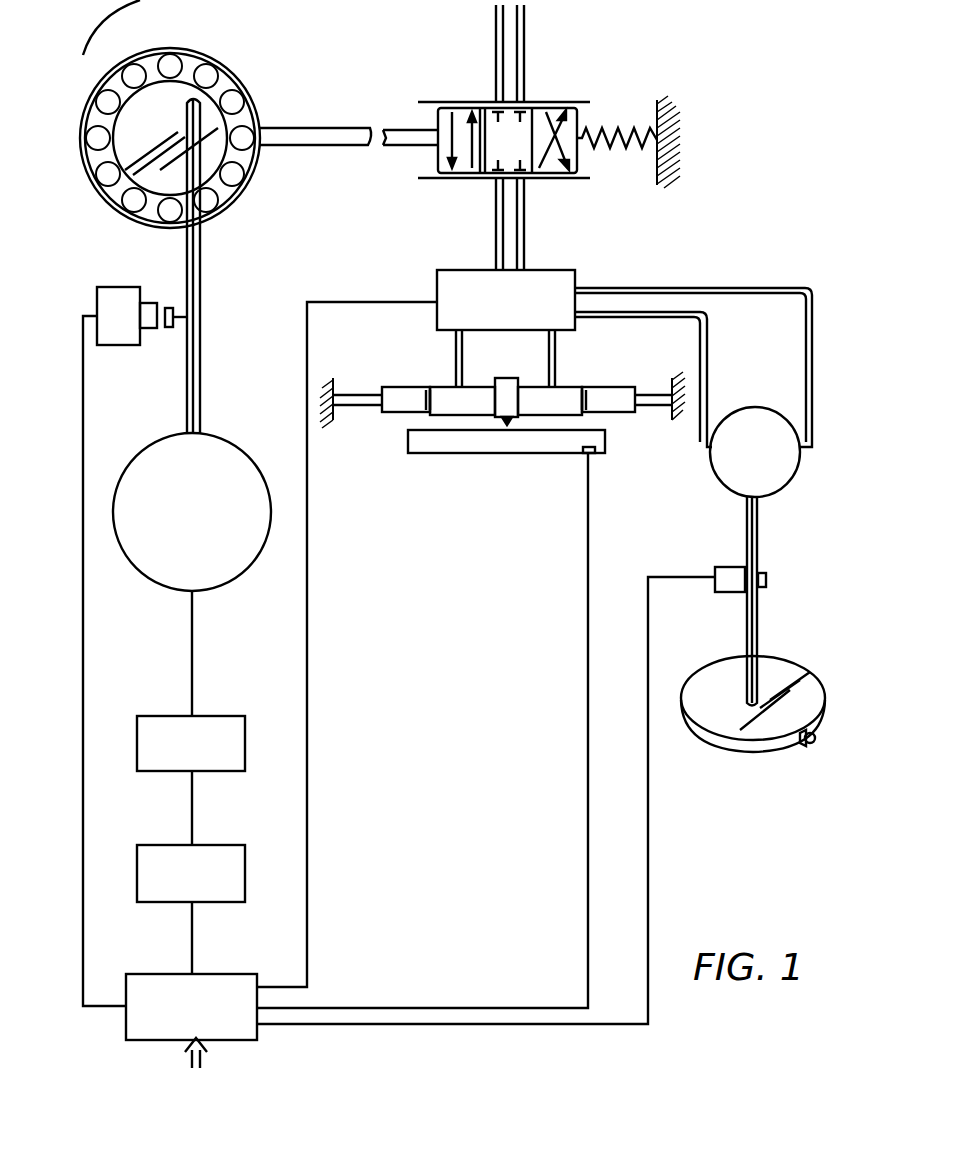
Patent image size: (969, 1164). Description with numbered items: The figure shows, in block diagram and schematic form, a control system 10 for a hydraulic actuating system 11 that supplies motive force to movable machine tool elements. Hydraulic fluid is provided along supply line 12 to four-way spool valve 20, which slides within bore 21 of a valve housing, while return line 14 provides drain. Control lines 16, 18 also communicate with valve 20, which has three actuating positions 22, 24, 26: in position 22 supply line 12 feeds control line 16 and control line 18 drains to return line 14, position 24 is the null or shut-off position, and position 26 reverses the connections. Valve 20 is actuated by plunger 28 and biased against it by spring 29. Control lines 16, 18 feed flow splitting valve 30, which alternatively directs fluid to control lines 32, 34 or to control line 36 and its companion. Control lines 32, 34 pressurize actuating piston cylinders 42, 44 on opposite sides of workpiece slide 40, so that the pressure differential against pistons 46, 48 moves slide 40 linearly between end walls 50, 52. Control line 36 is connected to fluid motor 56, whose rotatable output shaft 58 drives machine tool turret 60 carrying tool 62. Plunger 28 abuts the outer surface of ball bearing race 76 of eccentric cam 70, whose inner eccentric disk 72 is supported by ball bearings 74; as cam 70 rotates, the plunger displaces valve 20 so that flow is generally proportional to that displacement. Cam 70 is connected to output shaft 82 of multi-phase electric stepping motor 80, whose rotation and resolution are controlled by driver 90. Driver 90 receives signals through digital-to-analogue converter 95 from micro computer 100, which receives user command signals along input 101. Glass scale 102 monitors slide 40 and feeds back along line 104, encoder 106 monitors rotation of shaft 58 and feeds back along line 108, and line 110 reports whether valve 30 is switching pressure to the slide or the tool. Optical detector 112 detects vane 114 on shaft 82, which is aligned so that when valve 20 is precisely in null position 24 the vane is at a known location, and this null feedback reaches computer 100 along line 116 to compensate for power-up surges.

The control system 10 is at (96, 1038).
The hydraulic actuating system 11 is at (727, 163).
The supply line 12 is at (495, 42).
The return line 14 is at (525, 42).
The hydraulic control line 16 is at (494, 222).
The hydraulic control line 18 is at (525, 218).
The four-way spool valve 20 is at (536, 118).
The bore 21 is at (560, 106).
The actuating position 22 is at (440, 152).
The null position 24 is at (520, 153).
The actuating position 26 is at (577, 163).
The plunger 28 is at (357, 148).
The spring 29 is at (660, 104).
The flow splitting valve 30 is at (518, 311).
The control line 32 is at (455, 355).
The control line 34 is at (557, 355).
The control line 36 is at (678, 287).
The workpiece slide 40 is at (509, 380).
The actuating piston cylinder 42 is at (448, 390).
The actuating piston cylinder 44 is at (560, 397).
The piston 46 is at (418, 410).
The piston 48 is at (590, 395).
The end wall 50 is at (338, 382).
The end wall 52 is at (670, 420).
The fluid motor 56 is at (795, 470).
The output shaft 58 is at (760, 620).
The machine tool turret 60 is at (812, 705).
The tool 62 is at (808, 745).
The eccentric cam 70 is at (254, 193).
The inner eccentric disk 72 is at (170, 122).
The ball bearings 74 is at (222, 70).
The ball bearing race 76 is at (262, 118).
The stepping motor 80 is at (242, 460).
The output shaft 82 is at (200, 255).
The driver 90 is at (230, 716).
The digital-to-analogue converter 95 is at (232, 845).
The micro computer 100 is at (232, 974).
The input 101 is at (204, 1062).
The glass scale 102 is at (460, 452).
The line 104 is at (585, 572).
The encoder 106 is at (730, 567).
The line 108 is at (650, 814).
The line 110 is at (392, 300).
The optical detector 112 is at (118, 290).
The vane 114 is at (167, 306).
The line 116 is at (85, 405).